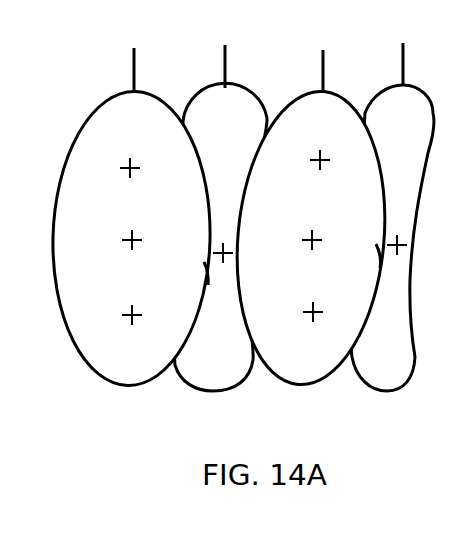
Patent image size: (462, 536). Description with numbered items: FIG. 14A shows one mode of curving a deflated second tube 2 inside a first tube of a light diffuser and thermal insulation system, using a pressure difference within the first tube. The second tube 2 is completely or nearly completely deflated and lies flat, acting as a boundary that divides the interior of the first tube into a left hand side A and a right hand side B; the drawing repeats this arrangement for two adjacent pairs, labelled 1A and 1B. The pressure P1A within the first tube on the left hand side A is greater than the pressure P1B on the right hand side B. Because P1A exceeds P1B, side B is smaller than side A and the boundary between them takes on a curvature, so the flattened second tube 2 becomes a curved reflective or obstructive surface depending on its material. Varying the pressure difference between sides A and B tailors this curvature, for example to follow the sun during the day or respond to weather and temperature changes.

The first element A 1A is at (97, 368).
The second element B 1B is at (210, 390).
The second tube 2 is at (208, 277).
The left hand side A is at (89, 336).
The right hand side B is at (213, 336).
The pressure on left hand side P1A is at (216, 364).
The pressure on right hand side P1B is at (302, 369).